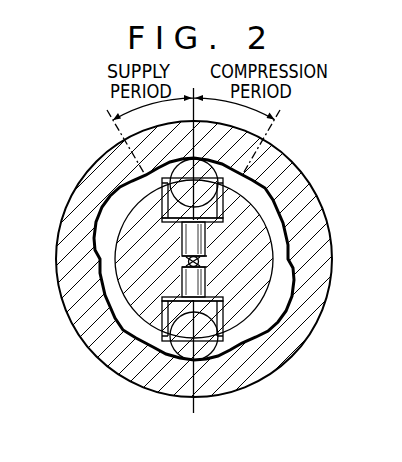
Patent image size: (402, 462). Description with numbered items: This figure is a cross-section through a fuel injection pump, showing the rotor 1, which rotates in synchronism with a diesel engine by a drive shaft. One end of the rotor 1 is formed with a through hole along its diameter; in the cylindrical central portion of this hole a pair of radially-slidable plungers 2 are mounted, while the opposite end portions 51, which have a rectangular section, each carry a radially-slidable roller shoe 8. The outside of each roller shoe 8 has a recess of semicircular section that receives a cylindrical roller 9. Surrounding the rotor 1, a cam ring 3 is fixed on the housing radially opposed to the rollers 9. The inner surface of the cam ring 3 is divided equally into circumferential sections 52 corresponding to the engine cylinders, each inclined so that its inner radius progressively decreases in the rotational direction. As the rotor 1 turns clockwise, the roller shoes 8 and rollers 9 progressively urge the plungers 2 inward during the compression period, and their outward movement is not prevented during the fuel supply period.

The rotor 1 is at (124, 237).
The plungers 2 is at (206, 283).
The cam ring 3 is at (62, 297).
The roller shoe 8 is at (148, 180).
The cylindrical roller 9 is at (187, 160).
The end portions 51 is at (182, 265).
The circumferential sections 52 is at (199, 166).